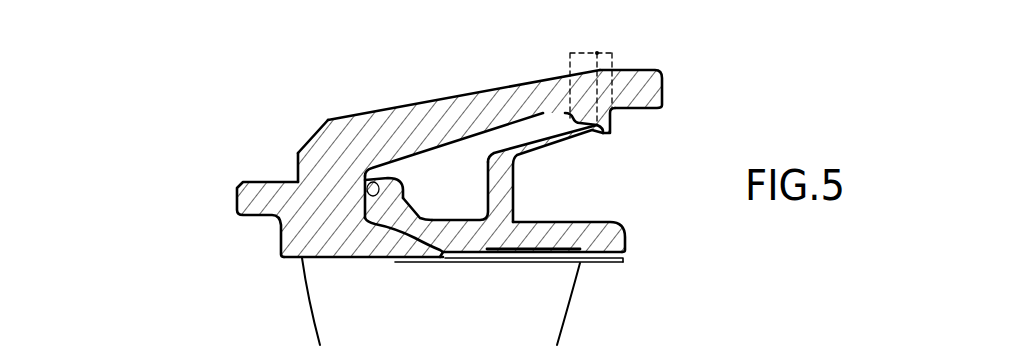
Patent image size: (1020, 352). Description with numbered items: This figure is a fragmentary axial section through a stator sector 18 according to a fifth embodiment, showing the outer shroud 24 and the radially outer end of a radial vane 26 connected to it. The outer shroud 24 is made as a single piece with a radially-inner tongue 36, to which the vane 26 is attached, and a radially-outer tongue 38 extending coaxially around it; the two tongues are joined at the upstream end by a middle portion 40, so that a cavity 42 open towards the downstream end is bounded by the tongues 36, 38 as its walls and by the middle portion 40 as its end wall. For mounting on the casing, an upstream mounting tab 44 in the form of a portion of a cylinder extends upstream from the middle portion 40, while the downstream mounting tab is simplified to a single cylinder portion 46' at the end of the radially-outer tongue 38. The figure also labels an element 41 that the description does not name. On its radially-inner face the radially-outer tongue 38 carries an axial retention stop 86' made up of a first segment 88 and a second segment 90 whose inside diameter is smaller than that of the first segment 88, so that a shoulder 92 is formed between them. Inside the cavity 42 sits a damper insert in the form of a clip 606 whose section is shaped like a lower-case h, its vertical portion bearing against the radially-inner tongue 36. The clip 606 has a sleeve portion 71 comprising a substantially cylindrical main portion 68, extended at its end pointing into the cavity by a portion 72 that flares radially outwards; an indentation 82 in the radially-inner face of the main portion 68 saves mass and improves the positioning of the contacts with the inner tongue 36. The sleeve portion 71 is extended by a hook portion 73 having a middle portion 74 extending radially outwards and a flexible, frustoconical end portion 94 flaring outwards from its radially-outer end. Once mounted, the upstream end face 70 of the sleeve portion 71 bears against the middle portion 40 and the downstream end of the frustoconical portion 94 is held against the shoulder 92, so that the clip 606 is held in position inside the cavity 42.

The stator sector 18 is at (310, 302).
The outer shroud 24 is at (438, 99).
The radial vane 26 is at (565, 324).
The radially-inner tongue 36 is at (447, 262).
The radially-outer tongue 38 is at (475, 115).
The middle portion 40 is at (313, 173).
The chamfered edge 41 is at (318, 127).
The cavity 42 is at (432, 172).
The upstream mounting tab 44 is at (248, 200).
The downstream mounting tab cylinder portion 46' is at (676, 84).
The main portion 68 is at (503, 237).
The upstream end face 70 is at (373, 177).
The sleeve portion 71 is at (573, 213).
The flared portion 72 is at (395, 215).
The hook portion 73 is at (513, 143).
The middle portion of hook portion 74 is at (491, 190).
The indentation 82 is at (532, 263).
The axial retention stop 86' is at (647, 125).
The first segment 88 is at (596, 52).
The second segment 90 is at (611, 52).
The shoulder 92 is at (588, 133).
The flexible end portion 94 is at (548, 148).
The clip 606 is at (636, 240).